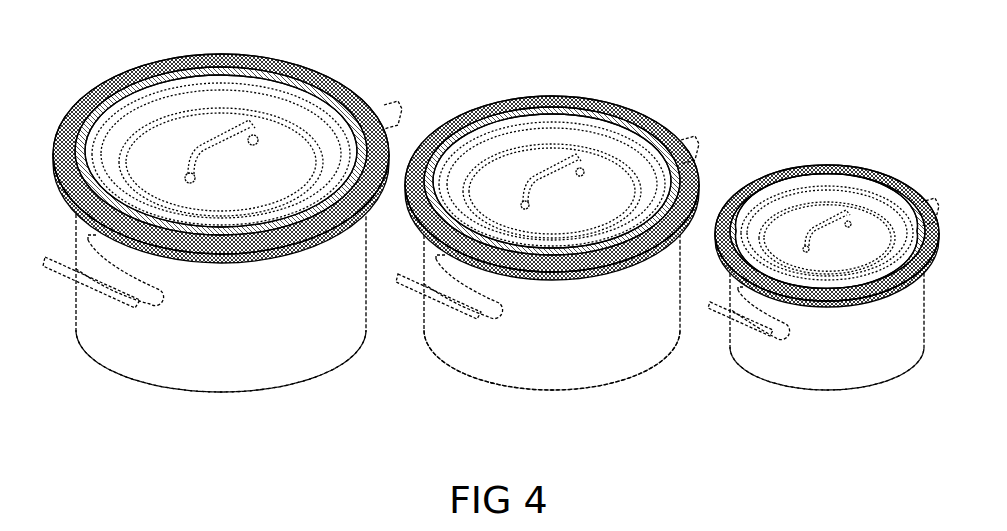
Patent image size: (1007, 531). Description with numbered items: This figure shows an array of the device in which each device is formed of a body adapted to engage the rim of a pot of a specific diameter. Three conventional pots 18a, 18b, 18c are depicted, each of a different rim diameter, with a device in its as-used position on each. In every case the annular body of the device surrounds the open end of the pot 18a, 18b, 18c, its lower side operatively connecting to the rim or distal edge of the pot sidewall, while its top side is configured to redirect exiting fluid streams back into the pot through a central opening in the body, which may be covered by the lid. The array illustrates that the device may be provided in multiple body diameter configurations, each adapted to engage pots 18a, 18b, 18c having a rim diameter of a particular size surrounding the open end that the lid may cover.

The pot 18a is at (110, 358).
The pot 18b is at (507, 370).
The pot 18c is at (803, 382).